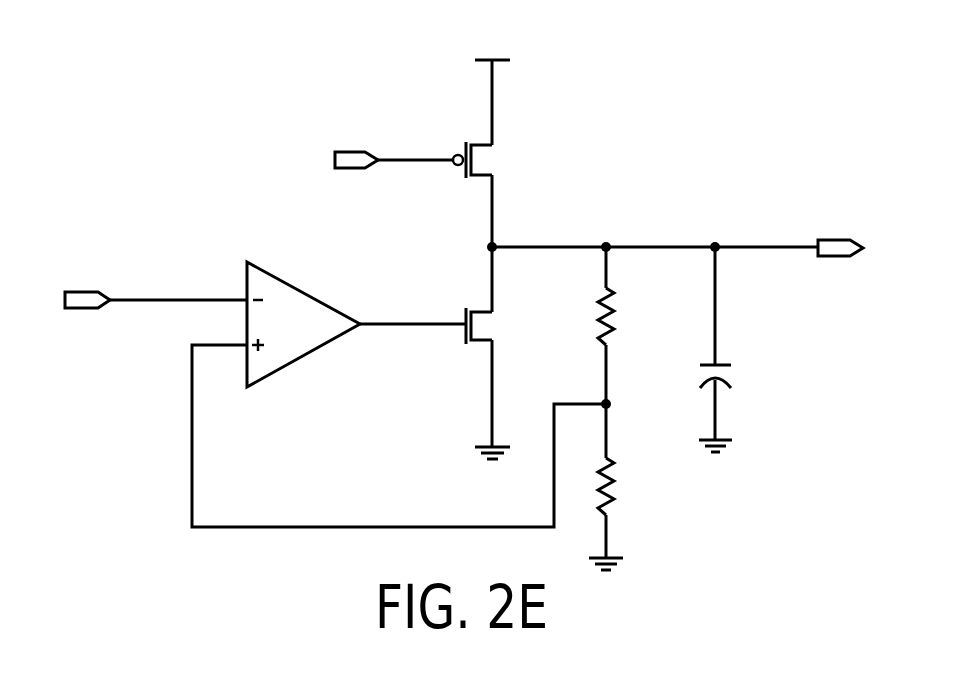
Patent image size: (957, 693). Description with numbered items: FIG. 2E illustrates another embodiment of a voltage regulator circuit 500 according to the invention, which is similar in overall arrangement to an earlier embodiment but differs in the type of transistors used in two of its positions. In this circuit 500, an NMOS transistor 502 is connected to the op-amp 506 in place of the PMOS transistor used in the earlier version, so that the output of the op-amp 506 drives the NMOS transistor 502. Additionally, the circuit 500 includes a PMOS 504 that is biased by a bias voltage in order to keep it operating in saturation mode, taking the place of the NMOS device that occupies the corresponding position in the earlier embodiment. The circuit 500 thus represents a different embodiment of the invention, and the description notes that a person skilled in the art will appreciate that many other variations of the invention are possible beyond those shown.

The voltage regulator circuit 500 is at (172, 180).
The NMOS transistor 502 is at (497, 322).
The PMOS 504 is at (498, 157).
The op-amp 506 is at (315, 350).